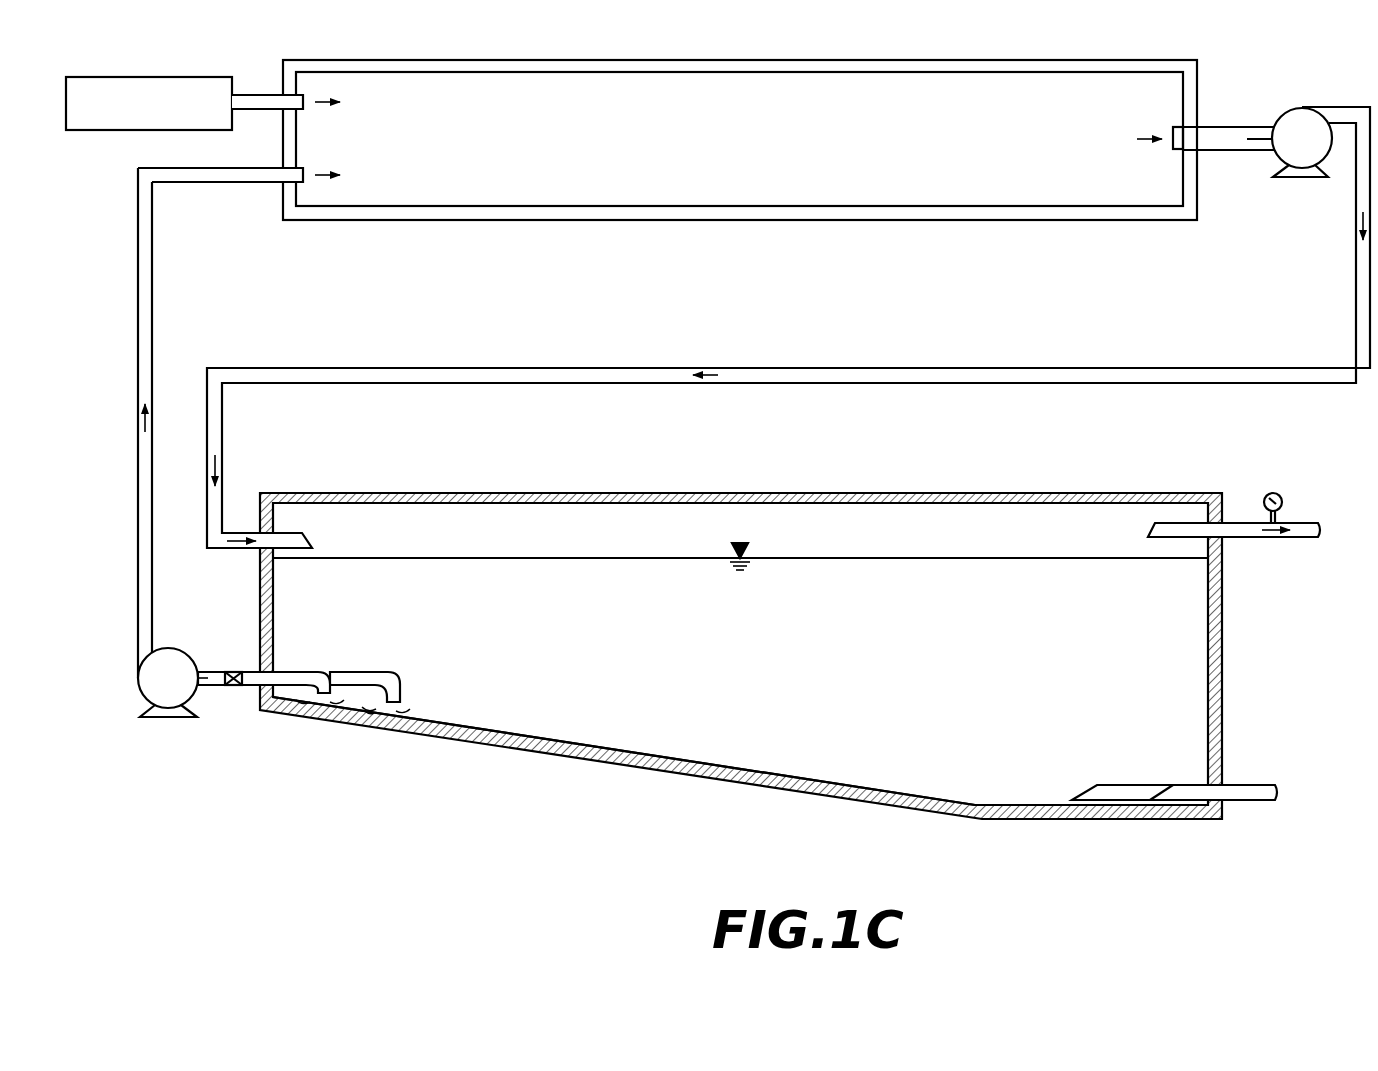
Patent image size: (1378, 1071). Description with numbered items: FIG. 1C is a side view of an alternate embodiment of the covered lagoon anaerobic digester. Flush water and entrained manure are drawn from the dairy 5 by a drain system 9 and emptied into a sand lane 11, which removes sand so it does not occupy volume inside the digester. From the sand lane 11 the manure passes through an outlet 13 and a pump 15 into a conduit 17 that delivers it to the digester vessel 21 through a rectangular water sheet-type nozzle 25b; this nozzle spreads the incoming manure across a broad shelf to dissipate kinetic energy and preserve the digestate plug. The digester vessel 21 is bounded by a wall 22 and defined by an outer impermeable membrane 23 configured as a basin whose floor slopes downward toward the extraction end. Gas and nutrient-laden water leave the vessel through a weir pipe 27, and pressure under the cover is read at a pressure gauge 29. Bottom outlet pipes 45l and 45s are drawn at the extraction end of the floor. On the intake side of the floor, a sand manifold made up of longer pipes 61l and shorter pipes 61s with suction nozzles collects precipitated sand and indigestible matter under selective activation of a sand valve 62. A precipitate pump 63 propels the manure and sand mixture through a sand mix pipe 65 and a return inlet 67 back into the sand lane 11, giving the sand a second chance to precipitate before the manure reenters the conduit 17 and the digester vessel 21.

The dairy 5 is at (128, 77).
The drain system 9 is at (256, 98).
The sand lane 11 is at (871, 154).
The outlet pipe 13 is at (1228, 151).
The pump 15 is at (1295, 116).
The conduit 17 is at (760, 368).
The covered lagoon anaerobic digester vessel 21 is at (780, 662).
The tank wall 22 is at (720, 493).
The outer impermeable membrane 23 is at (620, 765).
The sheet-type nozzle 25b is at (303, 545).
The weir pipe 27 is at (1152, 532).
The pressure gauge 29 is at (1273, 493).
The long bottom outlet pipe 45l is at (1090, 793).
The short bottom outlet pipe 45s is at (1186, 791).
The shorter pipe 61s is at (322, 673).
The longer pipe 61l is at (388, 673).
The sand valve 62 is at (232, 670).
The precipitate pump 63 is at (148, 686).
The sand mix pipe 65 is at (138, 588).
The return inlet pipe 67 is at (300, 169).